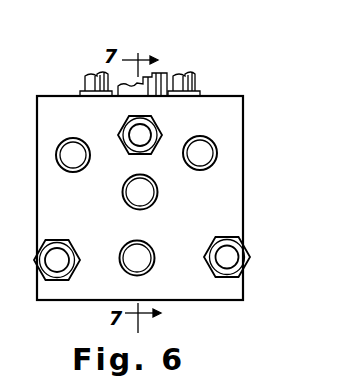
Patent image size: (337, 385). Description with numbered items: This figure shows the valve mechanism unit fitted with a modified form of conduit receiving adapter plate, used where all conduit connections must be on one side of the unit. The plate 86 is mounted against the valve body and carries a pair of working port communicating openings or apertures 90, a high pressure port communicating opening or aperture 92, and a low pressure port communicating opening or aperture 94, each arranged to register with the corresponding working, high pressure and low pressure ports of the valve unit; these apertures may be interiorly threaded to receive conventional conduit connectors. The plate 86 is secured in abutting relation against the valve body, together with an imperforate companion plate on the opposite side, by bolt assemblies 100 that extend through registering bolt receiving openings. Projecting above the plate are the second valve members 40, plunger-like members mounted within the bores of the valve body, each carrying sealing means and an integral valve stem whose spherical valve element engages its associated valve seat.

The second valve member 40 is at (90, 78).
The plate 86 is at (230, 113).
The working port communicating openings 90 is at (194, 140).
The high pressure port communicating opening 92 is at (150, 197).
The low pressure port communicating opening 94 is at (130, 253).
The bolt assemblies 100 is at (140, 138).